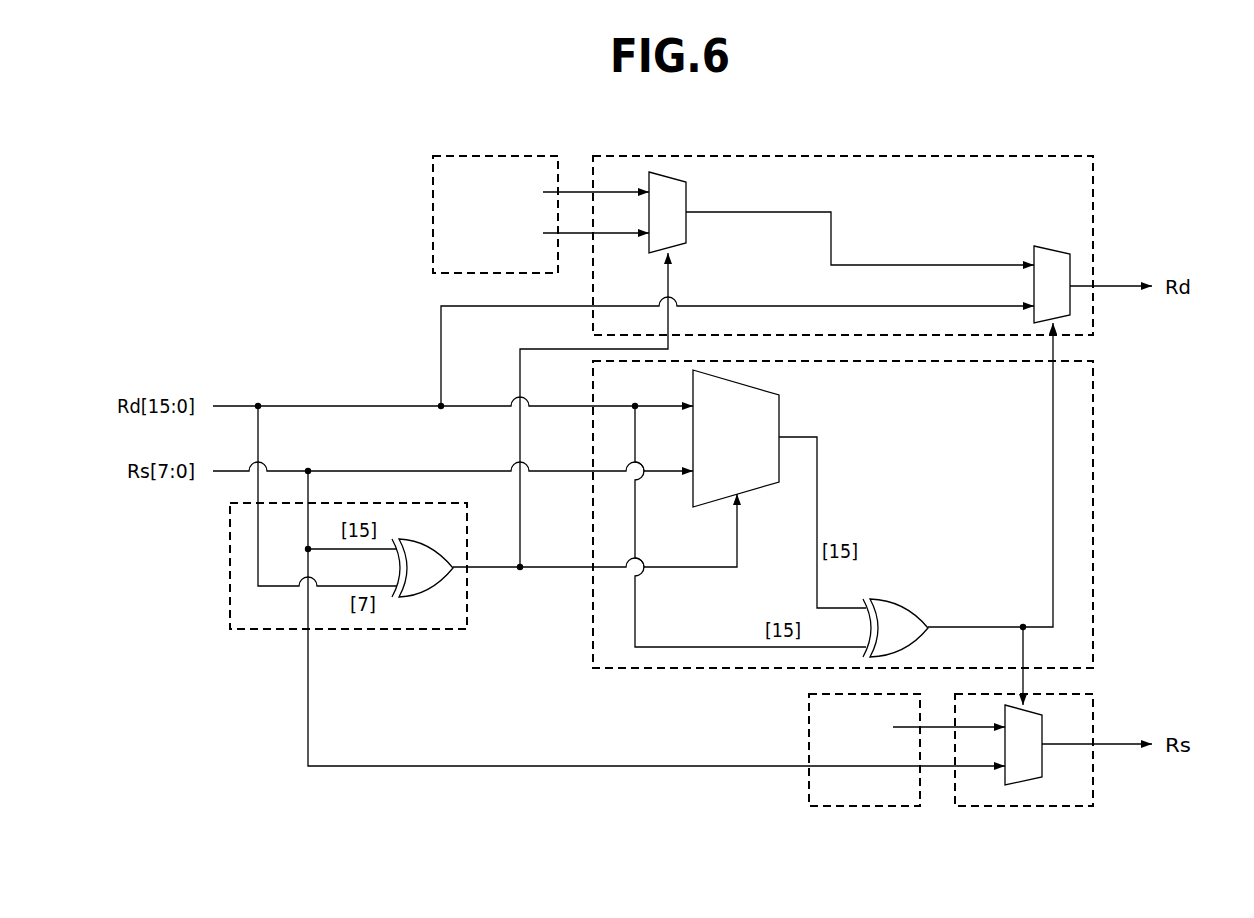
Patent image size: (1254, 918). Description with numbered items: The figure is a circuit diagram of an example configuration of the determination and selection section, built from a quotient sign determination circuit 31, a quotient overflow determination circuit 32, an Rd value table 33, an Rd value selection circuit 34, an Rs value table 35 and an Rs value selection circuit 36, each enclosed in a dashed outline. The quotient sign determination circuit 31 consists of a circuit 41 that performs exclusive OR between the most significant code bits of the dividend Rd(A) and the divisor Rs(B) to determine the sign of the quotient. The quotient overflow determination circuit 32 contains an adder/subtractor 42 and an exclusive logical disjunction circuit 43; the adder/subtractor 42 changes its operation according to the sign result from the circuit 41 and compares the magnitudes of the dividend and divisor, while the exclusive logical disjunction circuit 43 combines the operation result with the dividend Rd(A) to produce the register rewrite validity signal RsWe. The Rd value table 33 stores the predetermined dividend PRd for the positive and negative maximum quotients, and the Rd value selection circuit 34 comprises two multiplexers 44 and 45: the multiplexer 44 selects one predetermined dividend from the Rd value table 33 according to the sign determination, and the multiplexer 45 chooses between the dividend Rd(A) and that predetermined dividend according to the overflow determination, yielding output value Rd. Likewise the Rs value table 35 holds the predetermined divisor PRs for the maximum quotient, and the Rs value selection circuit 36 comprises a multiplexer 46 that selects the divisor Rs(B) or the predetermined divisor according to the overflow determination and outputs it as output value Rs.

The quotient sign determination circuit 31 is at (344, 601).
The quotient overflow determination circuit 32 is at (879, 514).
The Rd value table 33 is at (428, 155).
The Rd value selection circuit 34 is at (890, 229).
The Rs value table 35 is at (806, 721).
The Rs value selection circuit 36 is at (1061, 741).
The exclusive OR circuit 41 is at (445, 588).
The adder/subtractor 42 is at (782, 417).
The exclusive logical disjunction circuit 43 is at (910, 600).
The multiplexer 44 is at (690, 243).
The multiplexer 45 is at (1055, 246).
The multiplexer 46 is at (1042, 758).